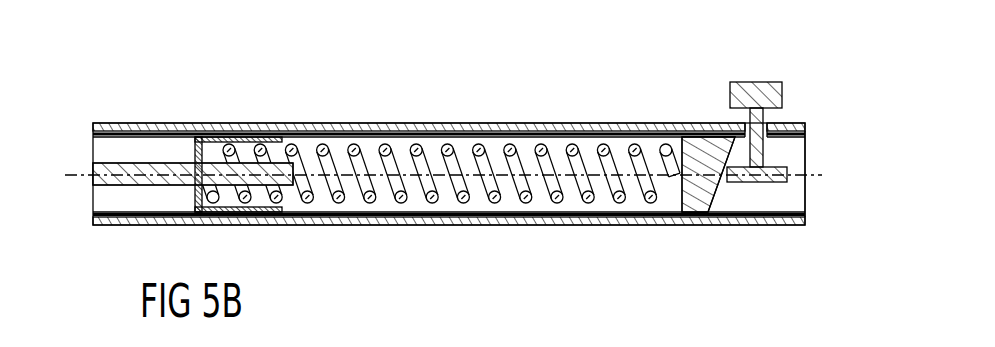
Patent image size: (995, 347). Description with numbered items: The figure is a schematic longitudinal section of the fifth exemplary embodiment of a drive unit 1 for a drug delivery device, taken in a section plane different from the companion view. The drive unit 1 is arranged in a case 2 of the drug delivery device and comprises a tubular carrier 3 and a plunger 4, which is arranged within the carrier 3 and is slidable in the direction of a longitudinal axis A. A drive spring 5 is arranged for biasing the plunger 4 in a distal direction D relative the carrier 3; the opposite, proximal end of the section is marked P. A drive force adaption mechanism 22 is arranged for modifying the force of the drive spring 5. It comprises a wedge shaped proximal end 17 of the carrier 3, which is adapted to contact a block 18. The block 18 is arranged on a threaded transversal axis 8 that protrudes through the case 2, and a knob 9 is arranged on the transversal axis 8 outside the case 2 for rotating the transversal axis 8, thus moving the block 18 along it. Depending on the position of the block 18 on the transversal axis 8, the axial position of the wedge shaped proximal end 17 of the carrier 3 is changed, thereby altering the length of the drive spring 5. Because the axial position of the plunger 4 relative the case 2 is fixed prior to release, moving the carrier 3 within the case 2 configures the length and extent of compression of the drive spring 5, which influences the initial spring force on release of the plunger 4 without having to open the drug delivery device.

The drive unit 1 is at (367, 123).
The case 2 is at (203, 123).
The tubular carrier 3 is at (302, 135).
The plunger 4 is at (160, 168).
The drive spring 5 is at (441, 165).
The threaded transversal axis 8 is at (757, 130).
The knob 9 is at (762, 92).
The wedge shaped proximal end 17 is at (722, 198).
The block 18 is at (768, 178).
The drive force adaption mechanism 22 is at (787, 143).
The longitudinal axis A is at (500, 176).
The distal direction D is at (246, 174).
The proximal direction P is at (645, 175).